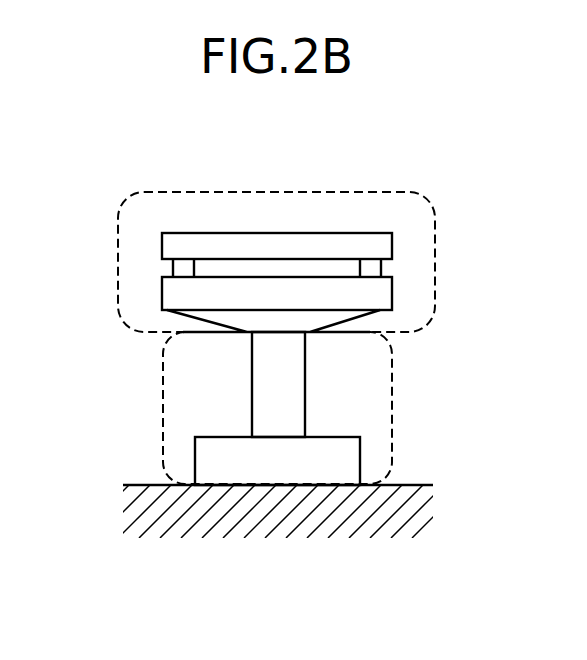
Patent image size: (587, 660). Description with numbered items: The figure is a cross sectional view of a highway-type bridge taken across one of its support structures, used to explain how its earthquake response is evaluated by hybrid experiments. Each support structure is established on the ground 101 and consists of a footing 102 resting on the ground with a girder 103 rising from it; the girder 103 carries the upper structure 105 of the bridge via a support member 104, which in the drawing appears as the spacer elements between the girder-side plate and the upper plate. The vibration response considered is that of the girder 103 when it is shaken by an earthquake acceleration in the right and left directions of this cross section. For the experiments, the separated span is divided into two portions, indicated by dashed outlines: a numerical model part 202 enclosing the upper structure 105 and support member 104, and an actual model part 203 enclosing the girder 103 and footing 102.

The ground 101 is at (403, 530).
The footing 102 is at (358, 455).
The girder 103 is at (305, 370).
The support member 104 is at (378, 263).
The upper structure 105 is at (280, 233).
The numerical model part 202 is at (190, 192).
The actual model part 203 is at (163, 403).